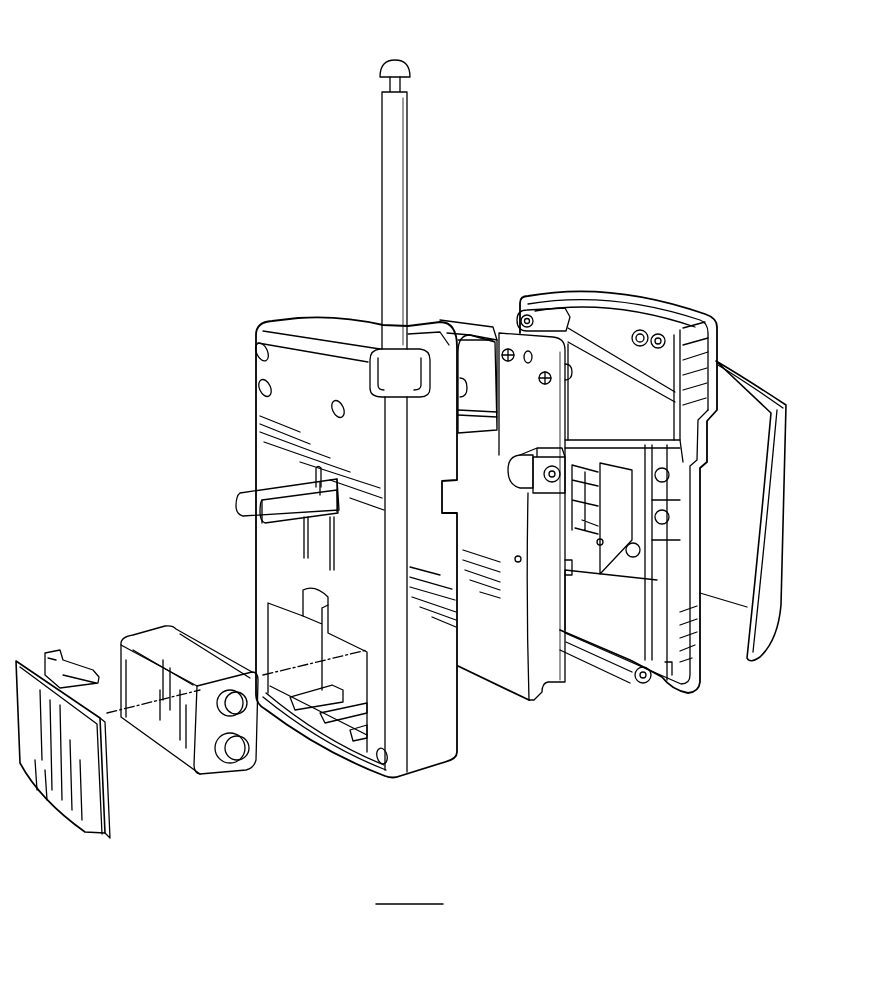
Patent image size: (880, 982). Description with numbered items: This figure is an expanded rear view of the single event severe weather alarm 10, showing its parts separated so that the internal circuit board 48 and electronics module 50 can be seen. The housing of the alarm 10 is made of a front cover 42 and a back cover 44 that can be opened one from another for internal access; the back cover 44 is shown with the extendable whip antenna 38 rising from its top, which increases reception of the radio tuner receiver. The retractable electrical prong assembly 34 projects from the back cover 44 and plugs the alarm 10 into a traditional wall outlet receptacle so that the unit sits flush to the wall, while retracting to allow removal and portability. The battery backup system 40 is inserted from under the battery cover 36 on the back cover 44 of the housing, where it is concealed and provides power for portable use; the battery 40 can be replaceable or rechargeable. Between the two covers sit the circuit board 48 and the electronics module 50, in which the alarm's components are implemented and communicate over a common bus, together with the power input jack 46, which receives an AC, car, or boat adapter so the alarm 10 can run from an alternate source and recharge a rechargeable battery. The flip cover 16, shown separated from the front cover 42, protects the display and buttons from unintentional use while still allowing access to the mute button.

The single event severe weather alarm 10 is at (83, 92).
The flip cover 16 is at (748, 406).
The retractable electrical prong assembly 34 is at (257, 497).
The battery cover 36 is at (87, 800).
The antenna 38 is at (396, 243).
The battery backup system 40 is at (185, 738).
The front cover 42 is at (658, 308).
The back cover 44 is at (328, 330).
The power input jack 46 is at (551, 478).
The circuit board 48 is at (542, 667).
The electronics module 50 is at (476, 368).